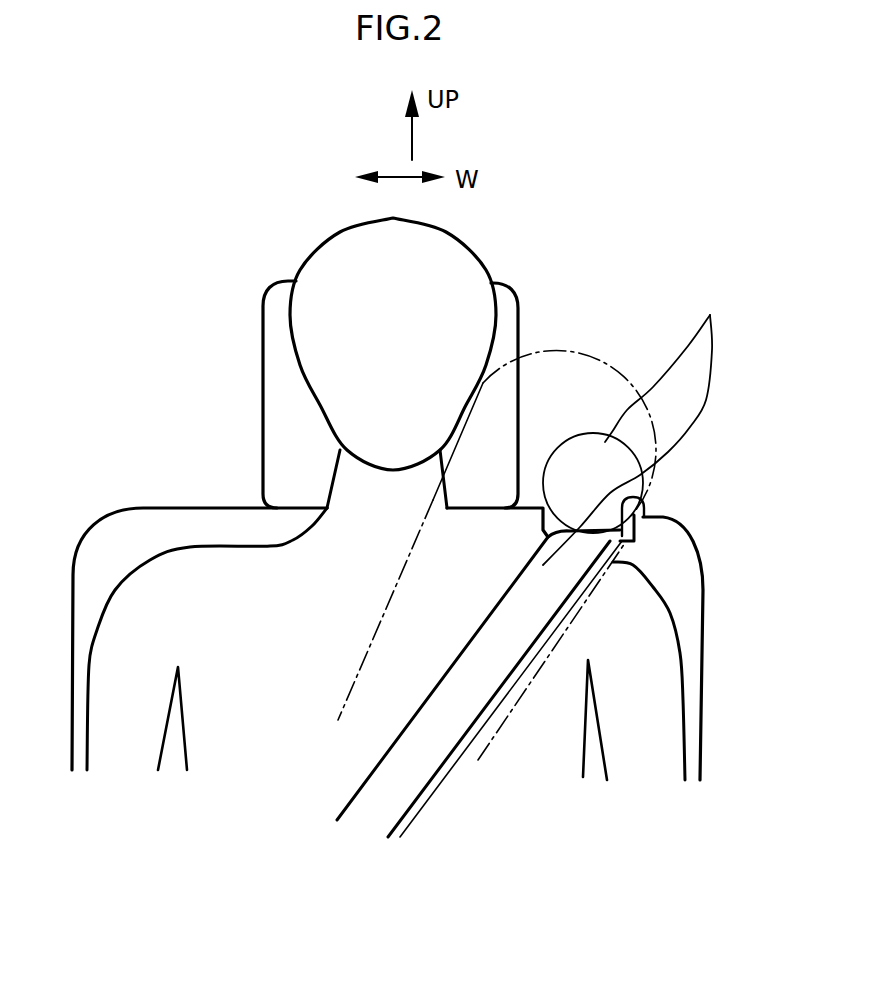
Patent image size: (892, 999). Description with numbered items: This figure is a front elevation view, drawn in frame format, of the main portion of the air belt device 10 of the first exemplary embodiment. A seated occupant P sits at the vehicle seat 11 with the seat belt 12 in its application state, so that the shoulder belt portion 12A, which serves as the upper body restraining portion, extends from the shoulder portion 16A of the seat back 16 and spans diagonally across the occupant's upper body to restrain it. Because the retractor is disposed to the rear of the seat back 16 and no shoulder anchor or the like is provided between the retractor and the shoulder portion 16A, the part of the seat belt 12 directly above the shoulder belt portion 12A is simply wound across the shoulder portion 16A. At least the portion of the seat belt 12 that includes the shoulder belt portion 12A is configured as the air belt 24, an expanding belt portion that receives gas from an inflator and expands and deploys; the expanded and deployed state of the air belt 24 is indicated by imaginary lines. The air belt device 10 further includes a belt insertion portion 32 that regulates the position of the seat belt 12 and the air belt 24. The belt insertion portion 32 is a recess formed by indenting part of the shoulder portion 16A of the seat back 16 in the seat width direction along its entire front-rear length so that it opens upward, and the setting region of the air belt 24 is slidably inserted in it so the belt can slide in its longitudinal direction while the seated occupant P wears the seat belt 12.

The air belt device 10 is at (400, 671).
The vehicle seat 11 is at (705, 693).
The seat belt 12 is at (490, 667).
The shoulder belt portion 12A is at (453, 768).
The seat back 16 is at (162, 520).
The shoulder portion 16A is at (527, 497).
The air belt 24 is at (608, 425).
The belt insertion portion 32 is at (650, 492).
The seated occupant P is at (655, 583).